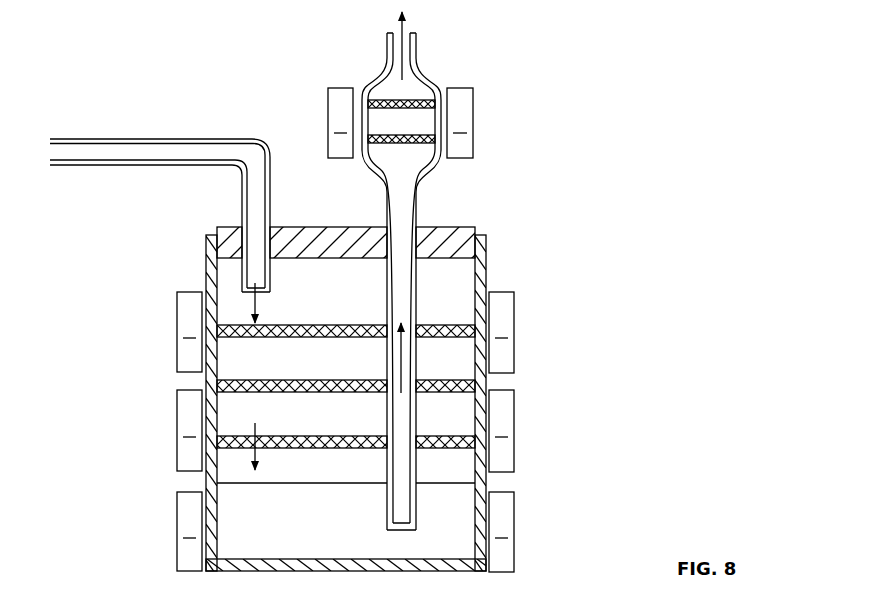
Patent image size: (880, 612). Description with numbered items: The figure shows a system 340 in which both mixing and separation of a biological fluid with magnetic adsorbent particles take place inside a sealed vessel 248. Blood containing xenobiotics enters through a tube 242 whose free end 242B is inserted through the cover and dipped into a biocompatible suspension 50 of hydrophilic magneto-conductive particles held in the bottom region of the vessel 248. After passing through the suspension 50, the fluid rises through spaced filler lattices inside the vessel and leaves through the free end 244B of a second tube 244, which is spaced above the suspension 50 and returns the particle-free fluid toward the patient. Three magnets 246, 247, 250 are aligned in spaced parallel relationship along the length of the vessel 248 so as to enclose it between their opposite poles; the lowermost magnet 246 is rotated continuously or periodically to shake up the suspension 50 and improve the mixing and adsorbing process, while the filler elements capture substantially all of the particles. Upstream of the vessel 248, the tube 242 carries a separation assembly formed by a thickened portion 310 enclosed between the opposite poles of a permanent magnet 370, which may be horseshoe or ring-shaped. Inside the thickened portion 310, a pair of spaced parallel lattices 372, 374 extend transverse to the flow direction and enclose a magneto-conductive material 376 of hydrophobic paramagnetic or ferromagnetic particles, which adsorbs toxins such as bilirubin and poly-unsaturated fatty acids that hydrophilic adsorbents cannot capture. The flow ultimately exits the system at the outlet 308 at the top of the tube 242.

The biocompatible suspension of magneto-conductive material 50 is at (240, 515).
The tube 242 is at (416, 42).
The free end of tube 242B is at (417, 527).
The tube 244 is at (150, 138).
The free end of tube 244B is at (243, 283).
The lowermost magnet 246 is at (563, 489).
The magnet 247 is at (560, 404).
The vessel 248 is at (228, 563).
The magnet 250 is at (565, 302).
The fluid outlet flow 308 is at (447, 14).
The thickened portion of tube 310 is at (418, 64).
The system 340 is at (610, 79).
The permanent magnet 370 is at (328, 114).
The lattice 372 is at (410, 143).
The lattice 374 is at (383, 100).
The magneto-conductive material 376 is at (388, 127).